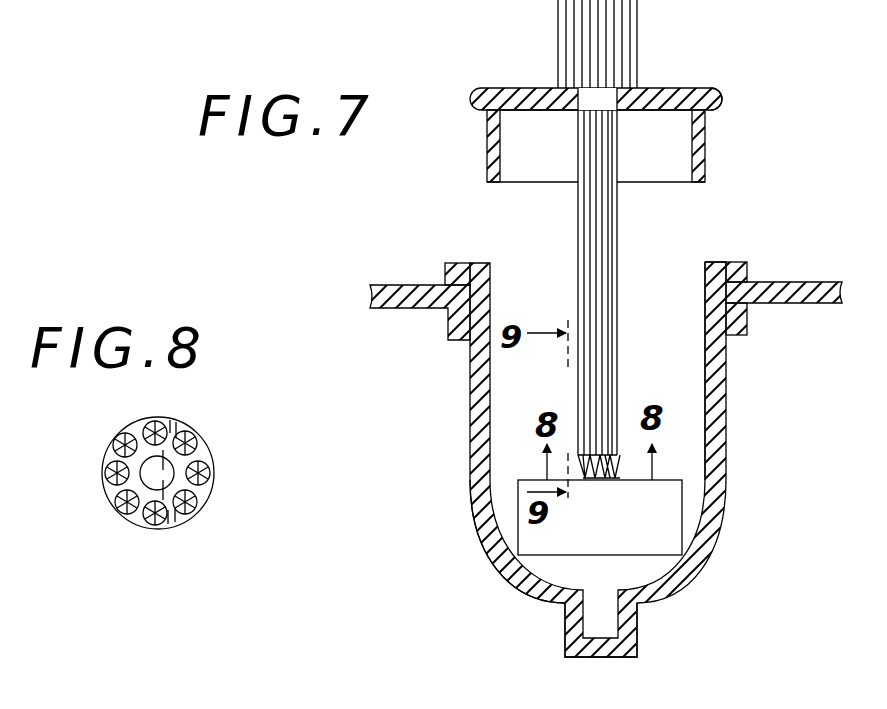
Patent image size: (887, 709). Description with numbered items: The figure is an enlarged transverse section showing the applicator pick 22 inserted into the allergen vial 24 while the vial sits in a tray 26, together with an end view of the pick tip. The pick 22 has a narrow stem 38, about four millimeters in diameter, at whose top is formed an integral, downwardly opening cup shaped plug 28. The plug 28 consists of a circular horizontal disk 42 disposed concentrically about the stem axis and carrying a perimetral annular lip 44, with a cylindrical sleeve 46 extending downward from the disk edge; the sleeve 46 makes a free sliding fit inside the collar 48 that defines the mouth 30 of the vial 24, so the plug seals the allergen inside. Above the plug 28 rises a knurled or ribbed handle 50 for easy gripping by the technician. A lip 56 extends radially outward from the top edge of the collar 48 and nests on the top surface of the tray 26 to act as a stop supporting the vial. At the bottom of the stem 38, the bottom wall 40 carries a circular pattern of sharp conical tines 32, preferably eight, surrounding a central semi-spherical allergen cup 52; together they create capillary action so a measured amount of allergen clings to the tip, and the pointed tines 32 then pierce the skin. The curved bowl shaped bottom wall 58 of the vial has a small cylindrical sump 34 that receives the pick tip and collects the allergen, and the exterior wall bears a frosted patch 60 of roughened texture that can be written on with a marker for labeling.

In FIG. 7, the applicator pick 22 is at (627, 128).
In FIG. 7, the allergen vial 24 is at (598, 452).
In FIG. 7, the tray 26 is at (813, 280).
In FIG. 7, the cup shaped plug 28 is at (535, 182).
In FIG. 7, the vial mouth 30 is at (705, 262).
In FIG. 7, the tines 32 is at (620, 458).
In FIG. 8, the tines 32 is at (160, 520).
In FIG. 7, the sump 34 is at (637, 628).
In FIG. 7, the stem 38 is at (618, 272).
In FIG. 8, the bottom wall 40 is at (200, 490).
In FIG. 7, the horizontal disk 42 is at (668, 88).
In FIG. 7, the annular lip 44 is at (723, 98).
In FIG. 7, the cylindrical sleeve 46 is at (705, 143).
In FIG. 7, the collar 48 is at (705, 368).
In FIG. 7, the handle 50 is at (630, 14).
In FIG. 8, the allergen cup 52 is at (170, 462).
In FIG. 7, the lip 56 is at (453, 262).
In FIG. 7, the vessel bottom wall 58 is at (528, 592).
In FIG. 7, the frosted patch 60 is at (620, 545).